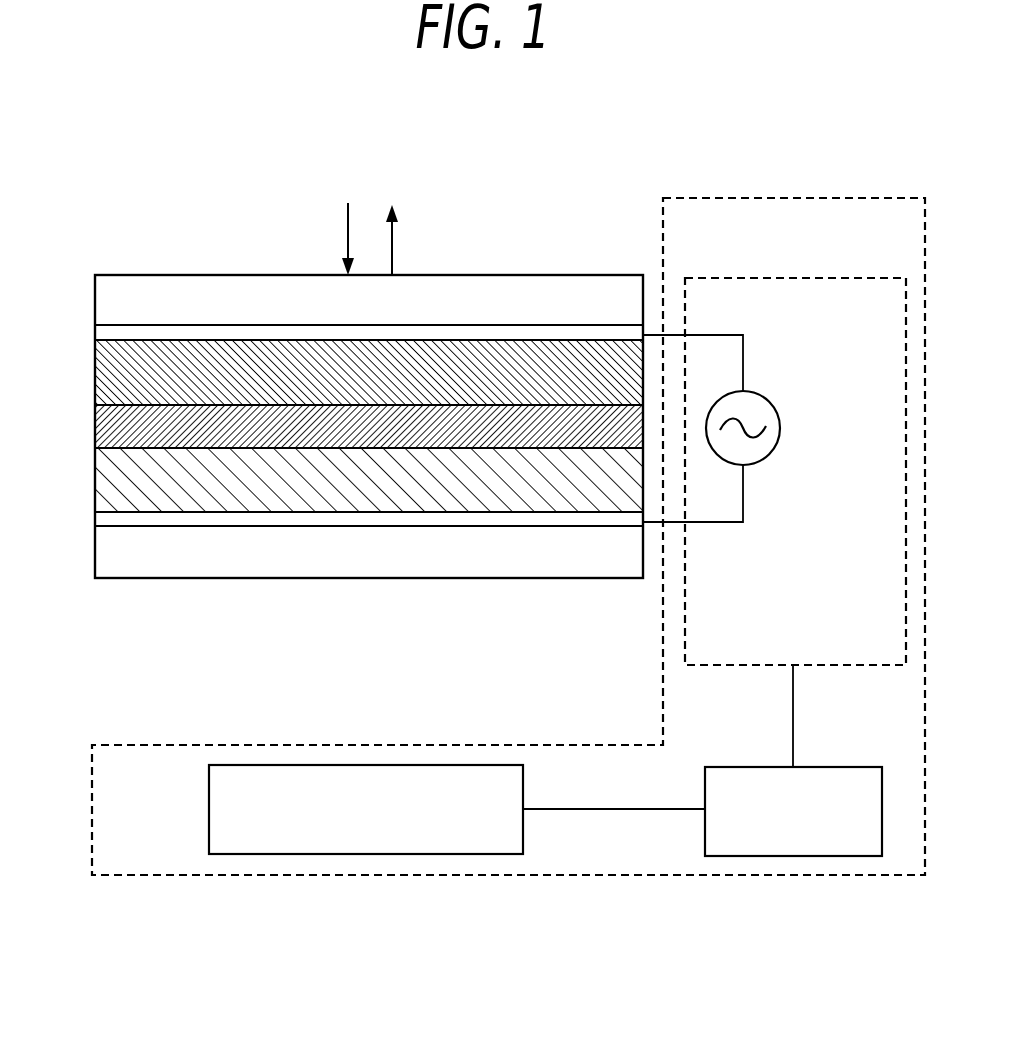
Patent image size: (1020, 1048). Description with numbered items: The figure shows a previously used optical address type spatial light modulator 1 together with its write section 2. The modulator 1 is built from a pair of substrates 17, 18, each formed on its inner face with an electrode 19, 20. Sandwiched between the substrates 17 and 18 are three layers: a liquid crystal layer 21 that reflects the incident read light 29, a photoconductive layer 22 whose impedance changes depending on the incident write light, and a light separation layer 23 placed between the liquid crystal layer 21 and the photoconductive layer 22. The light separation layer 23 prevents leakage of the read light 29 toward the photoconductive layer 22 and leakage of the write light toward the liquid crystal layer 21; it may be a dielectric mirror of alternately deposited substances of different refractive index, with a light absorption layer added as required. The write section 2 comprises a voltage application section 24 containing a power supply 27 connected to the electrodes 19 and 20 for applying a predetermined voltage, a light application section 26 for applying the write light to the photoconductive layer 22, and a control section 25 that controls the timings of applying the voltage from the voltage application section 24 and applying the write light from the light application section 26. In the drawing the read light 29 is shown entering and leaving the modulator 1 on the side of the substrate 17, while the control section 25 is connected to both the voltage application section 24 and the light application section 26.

The optical address type spatial light modulator 1 is at (104, 258).
The write section 2 is at (797, 190).
The substrate 17 is at (95, 303).
The substrate 18 is at (95, 554).
The electrode 19 is at (95, 334).
The electrode 20 is at (95, 521).
The liquid crystal layer 21 is at (95, 374).
The photoconductive layer 22 is at (95, 483).
The light separation layer 23 is at (95, 429).
The voltage application section 24 is at (797, 278).
The control section 25 is at (837, 767).
The light application section 26 is at (209, 809).
The power supply 27 is at (781, 427).
The read light 29 is at (370, 220).